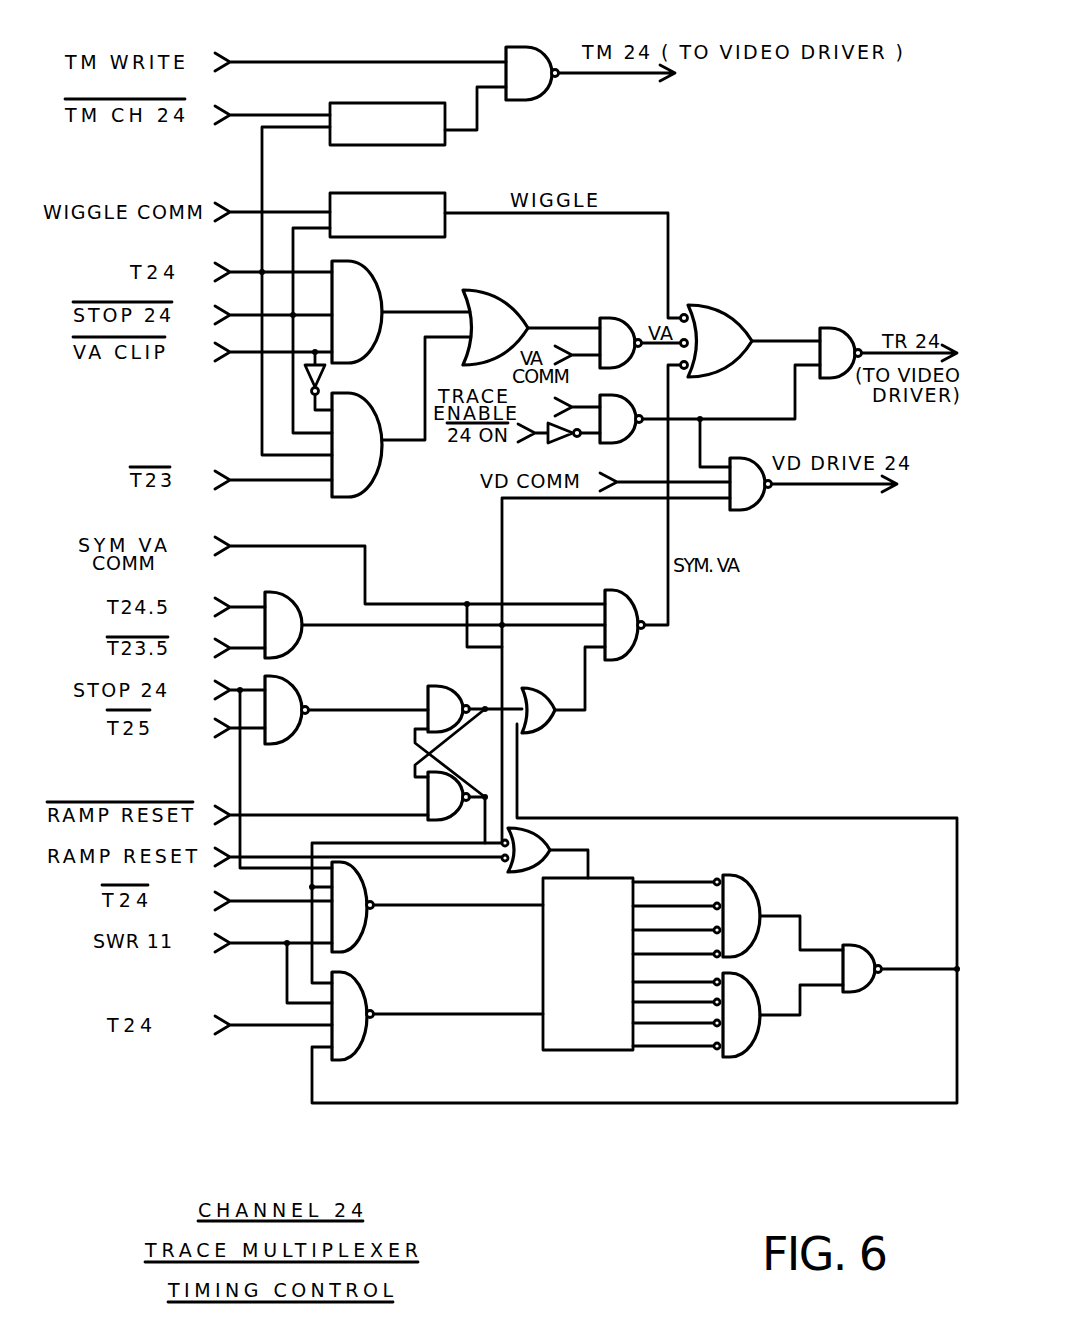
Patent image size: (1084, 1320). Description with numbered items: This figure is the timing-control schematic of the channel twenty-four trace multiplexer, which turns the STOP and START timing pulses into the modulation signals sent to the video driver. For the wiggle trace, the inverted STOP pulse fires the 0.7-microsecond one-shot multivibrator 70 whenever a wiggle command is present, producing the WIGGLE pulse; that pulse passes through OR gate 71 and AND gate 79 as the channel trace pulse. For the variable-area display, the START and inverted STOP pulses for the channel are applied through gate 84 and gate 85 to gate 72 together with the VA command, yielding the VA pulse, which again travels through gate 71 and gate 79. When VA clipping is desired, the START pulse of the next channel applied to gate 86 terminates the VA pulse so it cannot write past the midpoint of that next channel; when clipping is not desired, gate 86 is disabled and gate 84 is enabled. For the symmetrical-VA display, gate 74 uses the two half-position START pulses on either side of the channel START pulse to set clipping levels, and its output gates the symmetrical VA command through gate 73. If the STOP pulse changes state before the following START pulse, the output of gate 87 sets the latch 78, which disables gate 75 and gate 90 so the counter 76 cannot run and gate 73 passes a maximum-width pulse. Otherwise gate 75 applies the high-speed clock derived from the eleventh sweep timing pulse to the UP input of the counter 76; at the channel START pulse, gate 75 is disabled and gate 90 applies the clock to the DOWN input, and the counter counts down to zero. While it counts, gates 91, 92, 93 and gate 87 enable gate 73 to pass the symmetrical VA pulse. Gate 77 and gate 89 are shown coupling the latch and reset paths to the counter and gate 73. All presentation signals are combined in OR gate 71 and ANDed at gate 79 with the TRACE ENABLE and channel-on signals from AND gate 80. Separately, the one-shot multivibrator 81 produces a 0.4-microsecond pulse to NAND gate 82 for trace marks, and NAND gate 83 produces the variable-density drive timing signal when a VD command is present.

The 0.7-microsecond one-shot multivibrator 70 is at (410, 193).
The OR gate 71 is at (723, 310).
The gate 72 is at (610, 312).
The gate 73 is at (613, 592).
The gate 74 is at (277, 592).
The gate 75 is at (363, 935).
The counter 76 is at (597, 877).
The OR gate 77 is at (540, 837).
The latch 78 is at (410, 763).
The AND gate 79 is at (835, 328).
The AND gate 80 is at (617, 395).
The one-shot multivibrator 81 is at (379, 102).
The NAND gate 82 is at (516, 46).
The NAND gate 83 is at (735, 458).
The gate 84 is at (373, 264).
The gate 85 is at (498, 298).
The gate 86 is at (366, 396).
The gate 87 is at (283, 677).
The OR gate 89 is at (543, 727).
The gate 90 is at (367, 985).
The gate 91 is at (745, 882).
The gate 92 is at (752, 1042).
The gate 93 is at (858, 947).